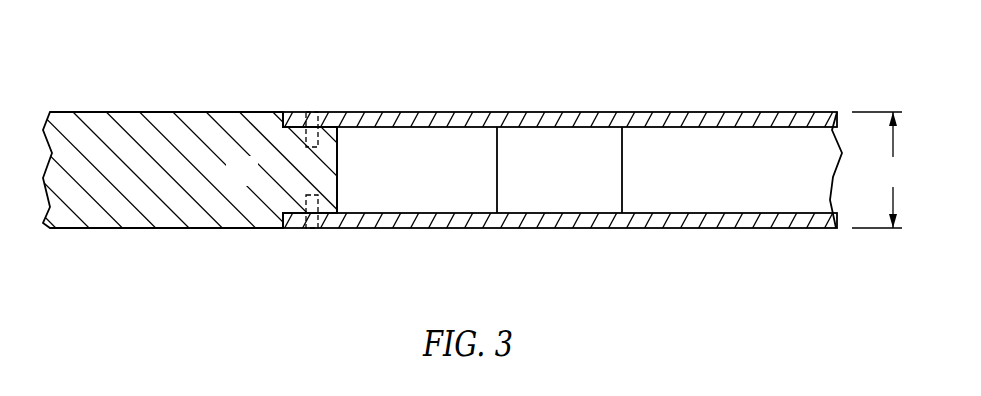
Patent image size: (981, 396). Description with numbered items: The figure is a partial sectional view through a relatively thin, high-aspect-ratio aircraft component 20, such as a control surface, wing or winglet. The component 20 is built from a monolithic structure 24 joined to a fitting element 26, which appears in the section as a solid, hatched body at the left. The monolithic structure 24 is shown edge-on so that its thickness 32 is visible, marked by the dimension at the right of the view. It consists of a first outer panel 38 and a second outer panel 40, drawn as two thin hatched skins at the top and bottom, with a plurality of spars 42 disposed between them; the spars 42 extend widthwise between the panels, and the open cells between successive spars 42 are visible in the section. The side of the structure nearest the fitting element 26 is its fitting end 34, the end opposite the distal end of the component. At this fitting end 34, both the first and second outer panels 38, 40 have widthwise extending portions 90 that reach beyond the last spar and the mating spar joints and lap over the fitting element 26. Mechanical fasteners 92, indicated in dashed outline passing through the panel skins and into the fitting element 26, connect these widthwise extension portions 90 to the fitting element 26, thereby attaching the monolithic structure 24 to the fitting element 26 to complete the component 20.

The component 20 is at (453, 180).
The monolithic structure 24 is at (567, 160).
The fitting element 26 is at (125, 207).
The thickness 32 is at (879, 170).
The fitting end 34 is at (276, 247).
The first outer panel 38 is at (676, 112).
The second outer panel 40 is at (717, 230).
The spars 42 is at (710, 185).
The widthwise extending portions 90 is at (296, 118).
The mechanical fasteners 92 is at (313, 149).